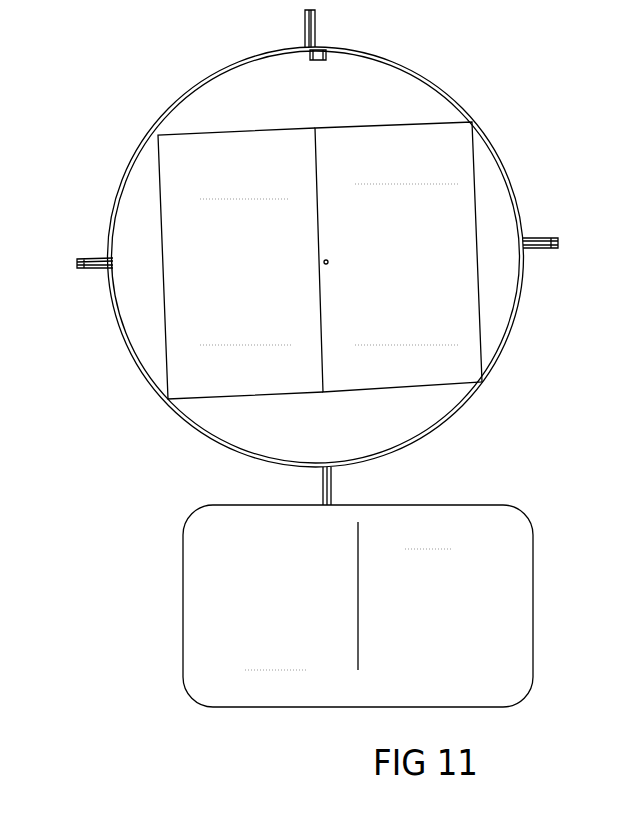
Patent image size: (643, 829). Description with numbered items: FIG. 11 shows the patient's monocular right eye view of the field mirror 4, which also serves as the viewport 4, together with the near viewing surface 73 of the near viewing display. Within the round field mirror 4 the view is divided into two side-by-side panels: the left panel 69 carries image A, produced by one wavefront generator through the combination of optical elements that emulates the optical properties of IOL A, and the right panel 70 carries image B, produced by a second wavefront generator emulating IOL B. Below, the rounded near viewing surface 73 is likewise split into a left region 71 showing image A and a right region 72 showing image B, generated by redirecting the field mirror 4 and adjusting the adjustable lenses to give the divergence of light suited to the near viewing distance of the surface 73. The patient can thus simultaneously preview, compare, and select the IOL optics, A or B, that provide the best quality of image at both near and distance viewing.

The field mirror 4 is at (306, 257).
The first selection region A 69 is at (210, 210).
The second selection region B 70 is at (427, 184).
The first indicator region A 71 is at (240, 597).
The second indicator region B 72 is at (478, 604).
The near viewing surface 73 is at (356, 576).